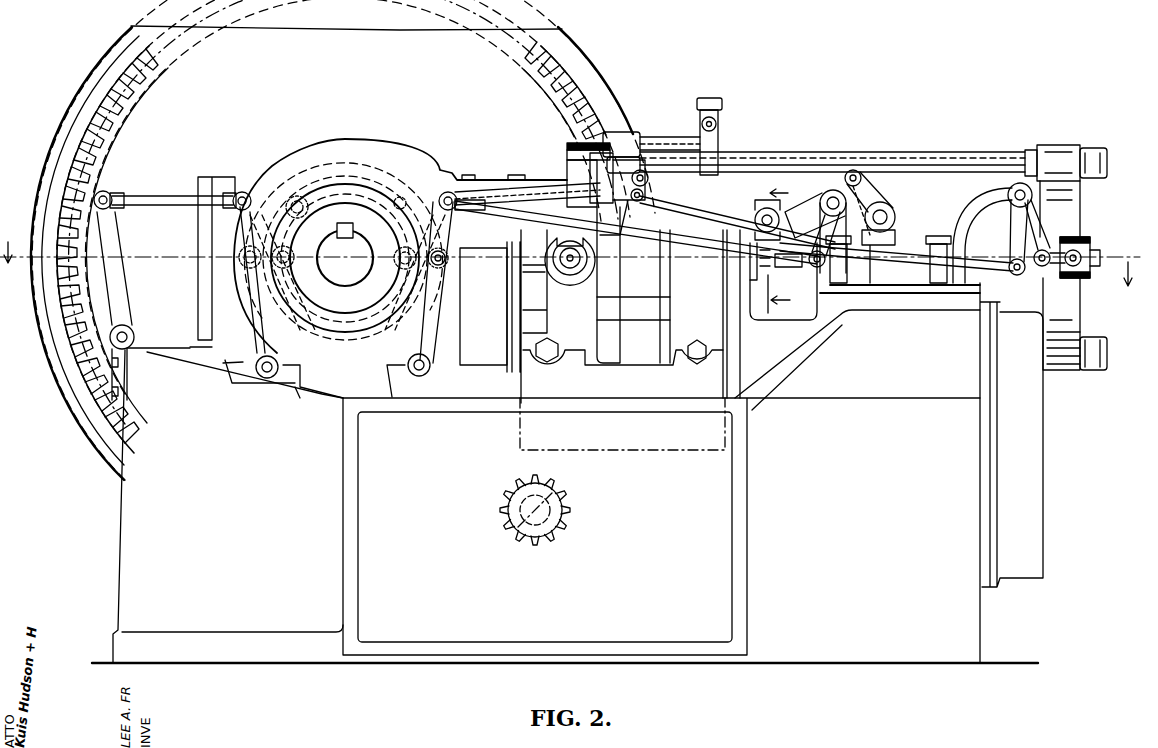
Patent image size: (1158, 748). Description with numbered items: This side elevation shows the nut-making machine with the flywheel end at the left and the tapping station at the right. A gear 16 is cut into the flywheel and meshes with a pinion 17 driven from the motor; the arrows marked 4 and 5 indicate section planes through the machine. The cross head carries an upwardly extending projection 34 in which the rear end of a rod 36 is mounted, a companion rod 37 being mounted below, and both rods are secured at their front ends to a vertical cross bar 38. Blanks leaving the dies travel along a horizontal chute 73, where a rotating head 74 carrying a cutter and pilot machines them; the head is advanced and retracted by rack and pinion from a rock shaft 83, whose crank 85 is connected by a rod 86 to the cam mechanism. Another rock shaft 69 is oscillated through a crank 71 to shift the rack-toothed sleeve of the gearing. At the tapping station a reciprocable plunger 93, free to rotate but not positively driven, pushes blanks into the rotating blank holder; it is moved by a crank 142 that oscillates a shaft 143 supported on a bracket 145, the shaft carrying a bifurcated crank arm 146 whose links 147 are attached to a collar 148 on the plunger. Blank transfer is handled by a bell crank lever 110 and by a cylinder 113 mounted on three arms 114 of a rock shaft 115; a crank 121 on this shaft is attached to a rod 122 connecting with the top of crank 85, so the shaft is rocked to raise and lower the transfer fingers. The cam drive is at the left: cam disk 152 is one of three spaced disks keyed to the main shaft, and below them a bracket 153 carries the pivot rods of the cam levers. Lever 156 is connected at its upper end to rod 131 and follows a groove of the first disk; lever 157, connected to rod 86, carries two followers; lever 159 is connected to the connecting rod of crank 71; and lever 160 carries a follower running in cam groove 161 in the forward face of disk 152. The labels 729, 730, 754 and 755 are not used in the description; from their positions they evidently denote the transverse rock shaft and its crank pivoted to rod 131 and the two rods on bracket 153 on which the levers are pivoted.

The gear 16 is at (70, 352).
The pinion 17 is at (574, 510).
The section line 4- 4 is at (570, 272).
The section line 5- 5 is at (783, 249).
The upwardly extending projection 34 is at (566, 151).
The rod 36 is at (921, 159).
The rod 37 is at (1107, 362).
The vertical cross bar 38 is at (1080, 306).
The rock shaft 69 is at (885, 216).
The crank 71 is at (868, 194).
The horizontal chute 73 is at (757, 281).
The rotating head 74 is at (345, 254).
The rock shaft 83 is at (597, 213).
The crank 85 is at (667, 205).
The rod 86 is at (543, 190).
The reciprocable plunger 93 is at (784, 265).
The bell crank lever 110 is at (663, 140).
The cylinder 113 is at (757, 219).
The arms 114 is at (801, 197).
The rock shaft 115 is at (838, 194).
The crank 121 is at (860, 232).
The rod 122 is at (697, 216).
The rod 131 is at (153, 199).
The crank 142 is at (1012, 226).
The shaft 143 is at (1011, 188).
The bracket 145 is at (985, 194).
The bifurcated crank arm 146 is at (1049, 241).
The links 147 is at (1052, 270).
The collar 148 is at (1083, 238).
The cam disk 152 is at (279, 181).
The bracket 153 is at (314, 379).
The lever 156 is at (237, 218).
The lever 157 is at (257, 345).
The lever 159 is at (445, 312).
The lever 160 is at (440, 334).
The cam groove 161 is at (345, 260).
The pivot pin 729 is at (135, 336).
The lever 730 is at (122, 279).
The pivot pin 754 is at (262, 375).
The pivot pin 755 is at (431, 369).